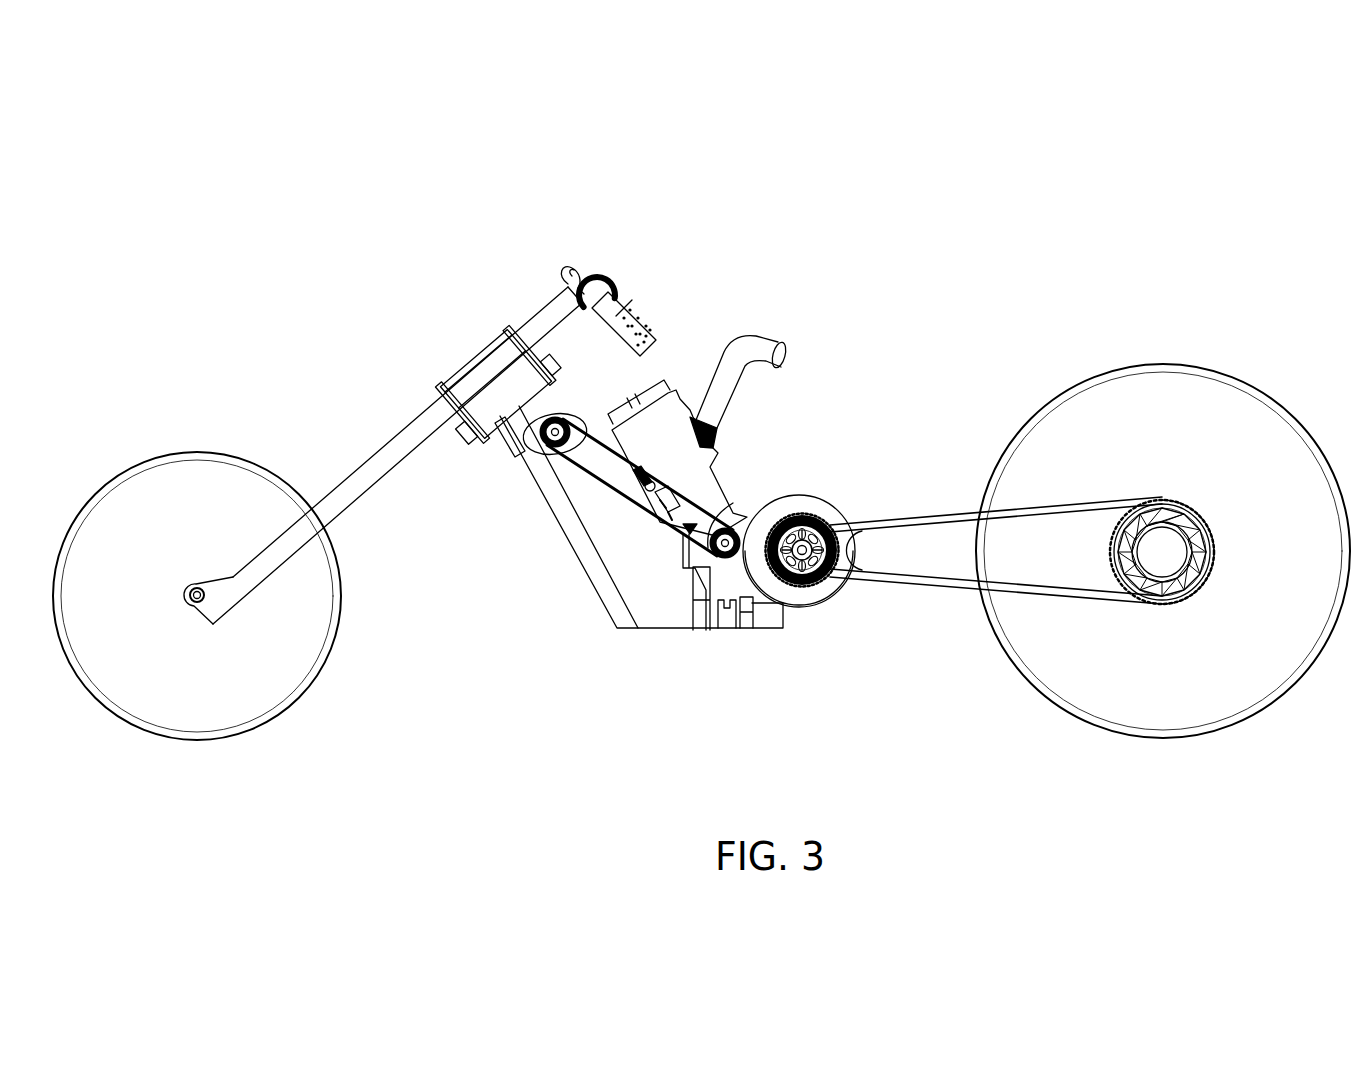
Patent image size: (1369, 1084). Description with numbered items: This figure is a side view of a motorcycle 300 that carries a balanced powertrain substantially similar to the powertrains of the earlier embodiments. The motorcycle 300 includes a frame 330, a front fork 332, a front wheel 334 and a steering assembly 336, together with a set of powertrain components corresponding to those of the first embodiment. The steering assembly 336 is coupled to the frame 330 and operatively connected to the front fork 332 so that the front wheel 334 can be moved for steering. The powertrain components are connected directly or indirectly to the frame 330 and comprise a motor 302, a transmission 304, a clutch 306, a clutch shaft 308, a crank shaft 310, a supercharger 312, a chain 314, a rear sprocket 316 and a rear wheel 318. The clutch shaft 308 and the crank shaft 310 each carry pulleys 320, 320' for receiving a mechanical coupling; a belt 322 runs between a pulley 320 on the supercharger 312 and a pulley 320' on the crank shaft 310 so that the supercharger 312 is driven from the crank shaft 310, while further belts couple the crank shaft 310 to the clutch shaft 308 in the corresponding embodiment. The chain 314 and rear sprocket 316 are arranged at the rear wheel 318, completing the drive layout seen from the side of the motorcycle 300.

The motorcycle 300 is at (318, 171).
The motor 302 is at (660, 390).
The transmission 304 is at (800, 495).
The clutch 306 is at (793, 603).
The clutch shaft 308 is at (809, 516).
The crank shaft 310 is at (685, 556).
The supercharger 312 is at (560, 414).
The chain 314 is at (946, 594).
The rear sprocket 316 is at (1160, 606).
The rear wheel 318 is at (1163, 364).
The pulley 320 is at (737, 504).
The pulley 320' is at (482, 452).
The belt 322 is at (595, 478).
The frame 330 is at (594, 590).
The front fork 332 is at (361, 459).
The front wheel 334 is at (197, 452).
The steering assembly 336 is at (617, 293).